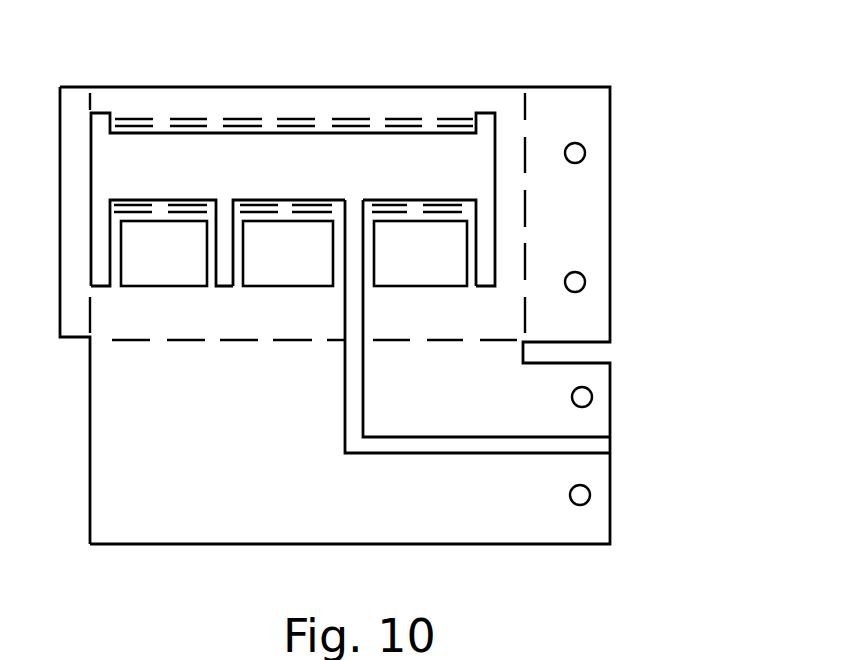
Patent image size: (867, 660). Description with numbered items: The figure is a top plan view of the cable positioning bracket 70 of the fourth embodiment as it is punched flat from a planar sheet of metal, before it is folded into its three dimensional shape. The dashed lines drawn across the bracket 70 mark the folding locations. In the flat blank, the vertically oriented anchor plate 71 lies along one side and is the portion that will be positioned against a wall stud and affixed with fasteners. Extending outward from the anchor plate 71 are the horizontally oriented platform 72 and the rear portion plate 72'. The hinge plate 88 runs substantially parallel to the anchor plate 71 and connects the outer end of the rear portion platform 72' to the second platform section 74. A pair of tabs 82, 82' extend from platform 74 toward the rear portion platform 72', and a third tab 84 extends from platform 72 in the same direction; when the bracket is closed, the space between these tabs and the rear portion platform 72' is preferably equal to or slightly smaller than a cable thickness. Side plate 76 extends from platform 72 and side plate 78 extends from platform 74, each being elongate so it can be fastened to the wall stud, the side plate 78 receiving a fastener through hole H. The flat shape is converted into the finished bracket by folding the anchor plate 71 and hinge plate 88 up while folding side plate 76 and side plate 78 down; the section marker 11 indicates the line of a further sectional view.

The cable positioning bracket 70 is at (670, 102).
The anchor plate 71 is at (590, 236).
The platform 72 is at (419, 267).
The rear portion plate 72' is at (293, 155).
The second platform section 74 is at (230, 327).
The side plate 76 is at (456, 404).
The side plate 78 is at (225, 404).
The tab 82 is at (289, 220).
The tab 82' is at (181, 183).
The third tab 84 is at (440, 200).
The hinge plate 88 is at (60, 283).
The hole H is at (587, 278).
The section line 11 is at (101, 72).